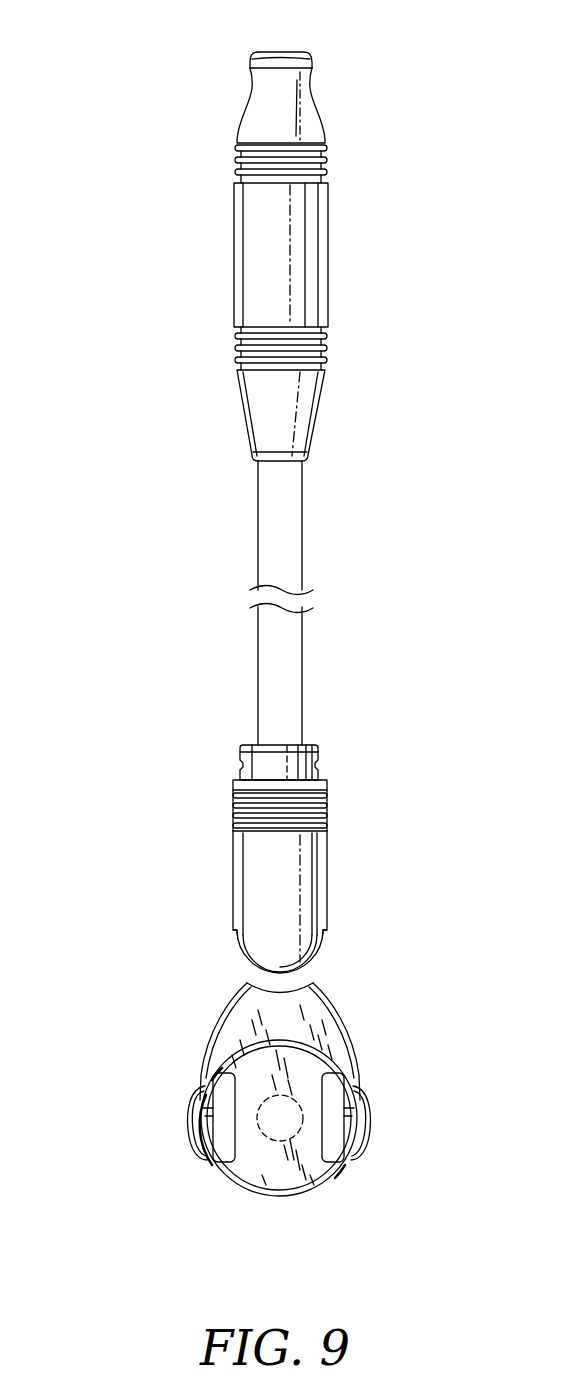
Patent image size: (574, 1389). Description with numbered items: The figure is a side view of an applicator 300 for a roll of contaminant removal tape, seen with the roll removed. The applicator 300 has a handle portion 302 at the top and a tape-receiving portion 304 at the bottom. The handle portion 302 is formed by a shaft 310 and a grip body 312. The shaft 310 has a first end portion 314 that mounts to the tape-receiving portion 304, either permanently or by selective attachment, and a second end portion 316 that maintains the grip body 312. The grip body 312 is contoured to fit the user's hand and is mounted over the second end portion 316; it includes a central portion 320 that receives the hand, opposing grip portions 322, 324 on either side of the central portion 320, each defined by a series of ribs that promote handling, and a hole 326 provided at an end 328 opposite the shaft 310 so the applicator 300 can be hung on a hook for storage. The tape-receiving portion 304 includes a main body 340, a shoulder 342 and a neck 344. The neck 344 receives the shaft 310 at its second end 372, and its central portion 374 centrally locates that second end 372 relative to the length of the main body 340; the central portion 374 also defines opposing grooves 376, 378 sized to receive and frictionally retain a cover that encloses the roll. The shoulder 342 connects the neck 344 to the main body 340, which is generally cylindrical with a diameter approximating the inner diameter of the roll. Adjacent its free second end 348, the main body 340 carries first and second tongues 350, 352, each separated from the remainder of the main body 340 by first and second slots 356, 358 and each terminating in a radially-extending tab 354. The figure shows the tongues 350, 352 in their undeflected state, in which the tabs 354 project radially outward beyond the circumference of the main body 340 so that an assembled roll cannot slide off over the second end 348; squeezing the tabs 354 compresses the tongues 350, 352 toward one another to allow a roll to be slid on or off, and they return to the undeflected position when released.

The applicator 300 is at (93, 489).
The handle portion 302 is at (247, 625).
The tape-receiving portion 304 is at (187, 1020).
The shaft 310 is at (303, 548).
The grip body 312 is at (330, 257).
The first end portion 314 is at (289, 744).
The second end portion 316 is at (288, 472).
The central portion 320 is at (254, 252).
The grip portion 322 is at (236, 347).
The grip portion 324 is at (236, 160).
The hole 326 is at (310, 84).
The end 328 is at (281, 50).
The main body 340 is at (262, 1163).
The shoulder 342 is at (343, 1014).
The neck 344 is at (232, 862).
The second end 348 is at (303, 1176).
The first tongue 350 is at (206, 1158).
The second tongue 352 is at (356, 1156).
The tab 354 is at (192, 1108).
The first slot 356 is at (212, 1165).
The second slot 358 is at (212, 1080).
The second end 372 is at (320, 764).
The central portion 374 is at (328, 868).
The groove 376 is at (239, 934).
The groove 378 is at (322, 934).